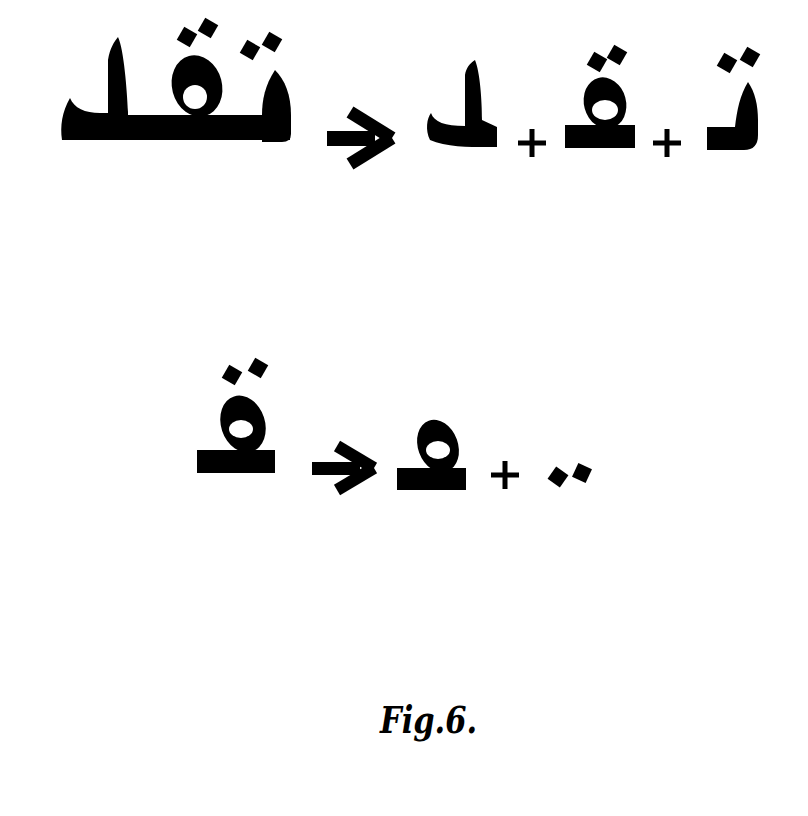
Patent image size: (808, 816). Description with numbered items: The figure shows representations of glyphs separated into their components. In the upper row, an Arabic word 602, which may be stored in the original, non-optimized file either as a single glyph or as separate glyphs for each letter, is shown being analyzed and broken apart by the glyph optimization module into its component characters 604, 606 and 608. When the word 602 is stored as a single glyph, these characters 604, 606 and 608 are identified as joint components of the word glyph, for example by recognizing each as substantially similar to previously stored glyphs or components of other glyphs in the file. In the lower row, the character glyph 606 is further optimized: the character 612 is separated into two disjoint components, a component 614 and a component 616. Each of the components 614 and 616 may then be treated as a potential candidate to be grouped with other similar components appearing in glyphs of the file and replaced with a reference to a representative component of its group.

The Arabic word 602 is at (167, 163).
The component character 604 is at (468, 165).
The component character 606 is at (602, 163).
The component character 608 is at (727, 163).
The character 612 is at (240, 482).
The component 614 is at (438, 493).
The component 616 is at (568, 493).